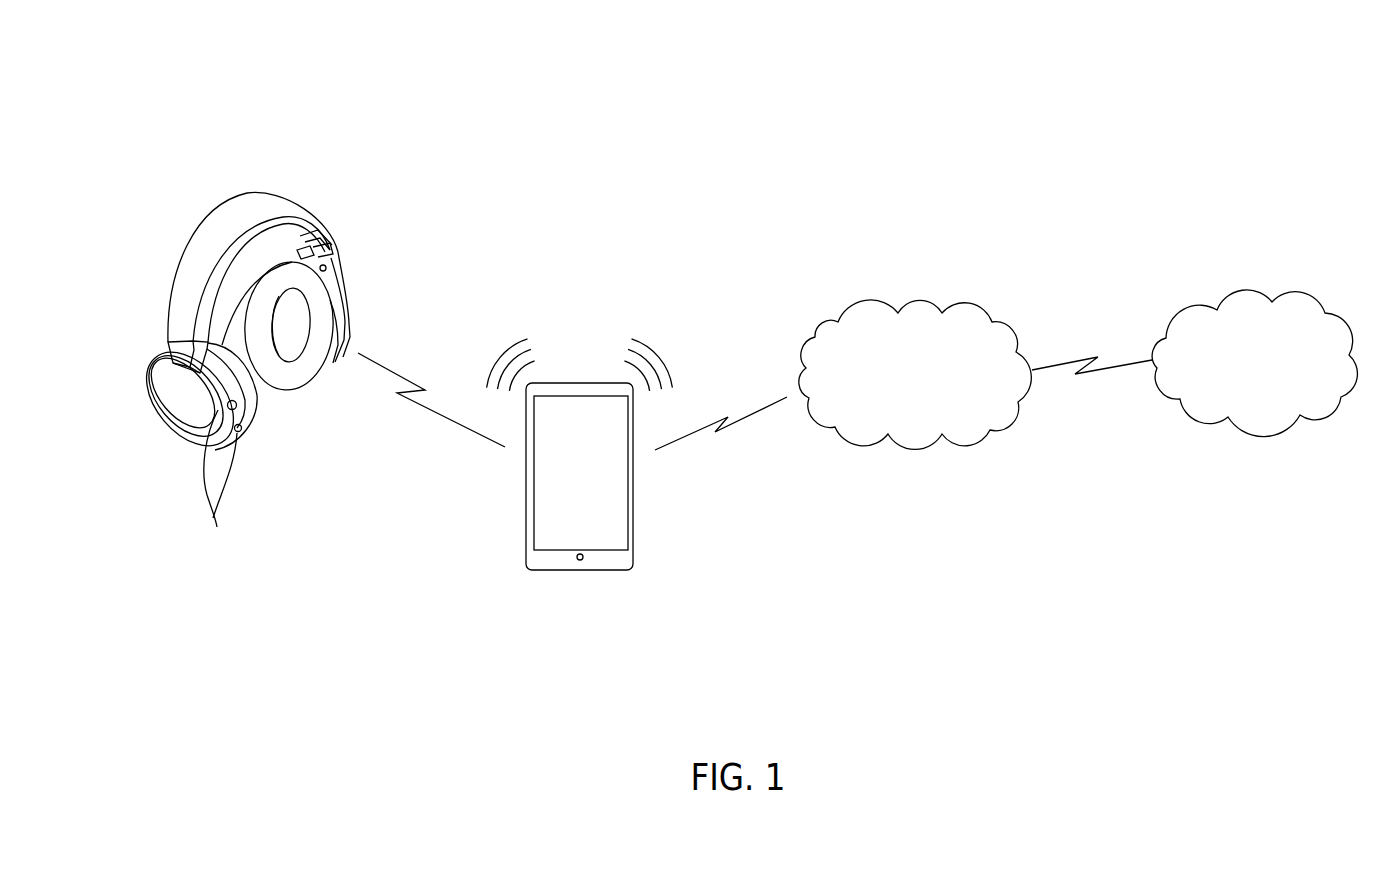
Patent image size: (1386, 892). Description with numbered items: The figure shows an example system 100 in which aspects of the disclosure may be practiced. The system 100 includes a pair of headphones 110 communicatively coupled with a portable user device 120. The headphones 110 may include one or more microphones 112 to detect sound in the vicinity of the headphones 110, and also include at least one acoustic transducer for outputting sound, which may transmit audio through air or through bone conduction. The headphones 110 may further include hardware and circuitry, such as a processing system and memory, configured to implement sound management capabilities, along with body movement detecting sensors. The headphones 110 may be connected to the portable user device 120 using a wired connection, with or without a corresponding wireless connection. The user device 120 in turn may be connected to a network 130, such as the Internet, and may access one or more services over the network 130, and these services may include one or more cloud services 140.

The system 100 is at (1137, 136).
The headphones 110 is at (261, 204).
The microphones 112 is at (218, 486).
The portable user device 120 is at (580, 573).
The network 130 is at (896, 404).
The cloud services 140 is at (1247, 389).